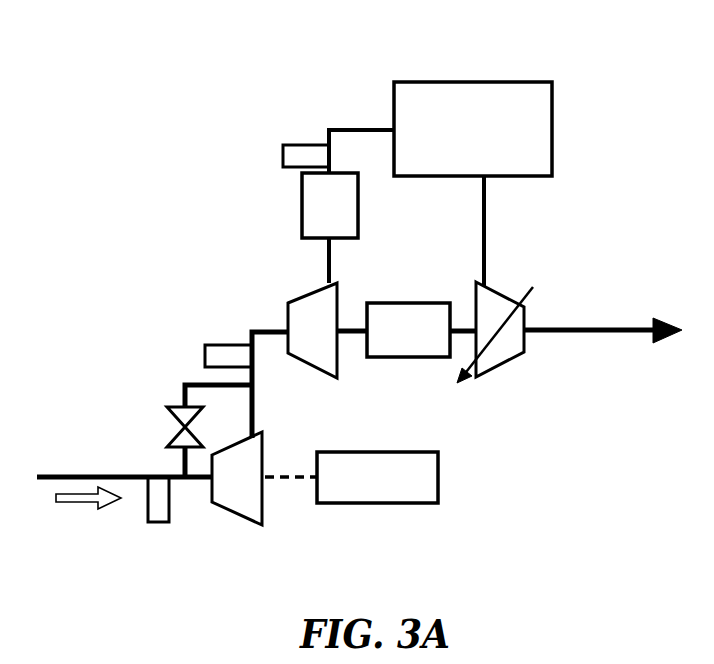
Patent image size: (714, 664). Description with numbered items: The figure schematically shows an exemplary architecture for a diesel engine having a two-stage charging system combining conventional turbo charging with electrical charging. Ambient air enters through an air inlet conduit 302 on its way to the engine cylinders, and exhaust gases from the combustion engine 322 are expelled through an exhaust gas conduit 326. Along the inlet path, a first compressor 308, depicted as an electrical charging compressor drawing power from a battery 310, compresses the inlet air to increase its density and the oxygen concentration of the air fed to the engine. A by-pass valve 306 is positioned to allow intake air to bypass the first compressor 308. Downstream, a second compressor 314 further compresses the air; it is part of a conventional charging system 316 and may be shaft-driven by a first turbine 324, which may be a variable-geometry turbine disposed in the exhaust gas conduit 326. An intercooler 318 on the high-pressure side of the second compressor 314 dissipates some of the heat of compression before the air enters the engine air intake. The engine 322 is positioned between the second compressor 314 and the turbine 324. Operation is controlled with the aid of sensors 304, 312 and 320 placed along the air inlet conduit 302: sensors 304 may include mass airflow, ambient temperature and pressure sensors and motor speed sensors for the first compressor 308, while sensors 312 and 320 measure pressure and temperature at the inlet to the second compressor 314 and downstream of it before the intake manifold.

The air inlet conduit 302 is at (104, 476).
The sensors 304 is at (147, 513).
The by-pass valve 306 is at (176, 407).
The first compressor 308 is at (234, 512).
The battery 310 is at (371, 504).
The sensor 312 is at (228, 346).
The second compressor 314 is at (320, 373).
The conventional charging system 316 is at (408, 358).
The intercooler 318 is at (302, 205).
The sensor 320 is at (310, 145).
The engine 322 is at (472, 82).
The first turbine 324 is at (494, 370).
The exhaust gas conduit 326 is at (588, 328).